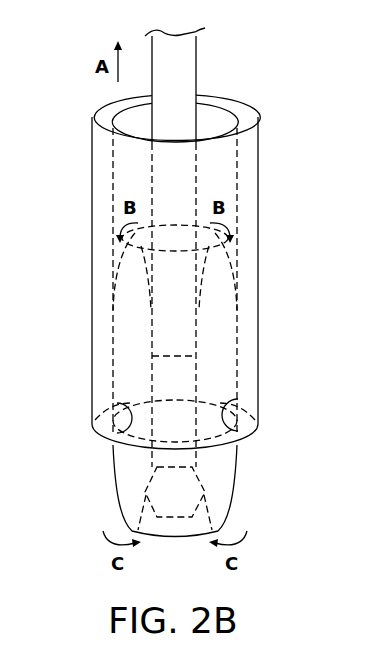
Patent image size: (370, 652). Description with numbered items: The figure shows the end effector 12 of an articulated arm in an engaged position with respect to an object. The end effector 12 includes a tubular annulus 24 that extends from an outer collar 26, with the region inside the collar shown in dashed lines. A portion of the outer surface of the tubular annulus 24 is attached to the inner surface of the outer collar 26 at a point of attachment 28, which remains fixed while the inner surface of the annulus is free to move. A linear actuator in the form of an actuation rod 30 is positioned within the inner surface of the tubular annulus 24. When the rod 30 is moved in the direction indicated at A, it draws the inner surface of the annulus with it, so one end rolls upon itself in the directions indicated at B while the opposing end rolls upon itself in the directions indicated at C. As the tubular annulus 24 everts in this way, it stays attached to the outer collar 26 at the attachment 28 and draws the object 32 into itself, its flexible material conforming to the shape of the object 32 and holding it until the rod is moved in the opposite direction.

The end effector 12 is at (51, 156).
The tubular annulus 24 is at (228, 502).
The outer collar 26 is at (252, 183).
The point of attachment 28 is at (117, 403).
The actuation rod 30 is at (196, 62).
The object 32 is at (180, 515).